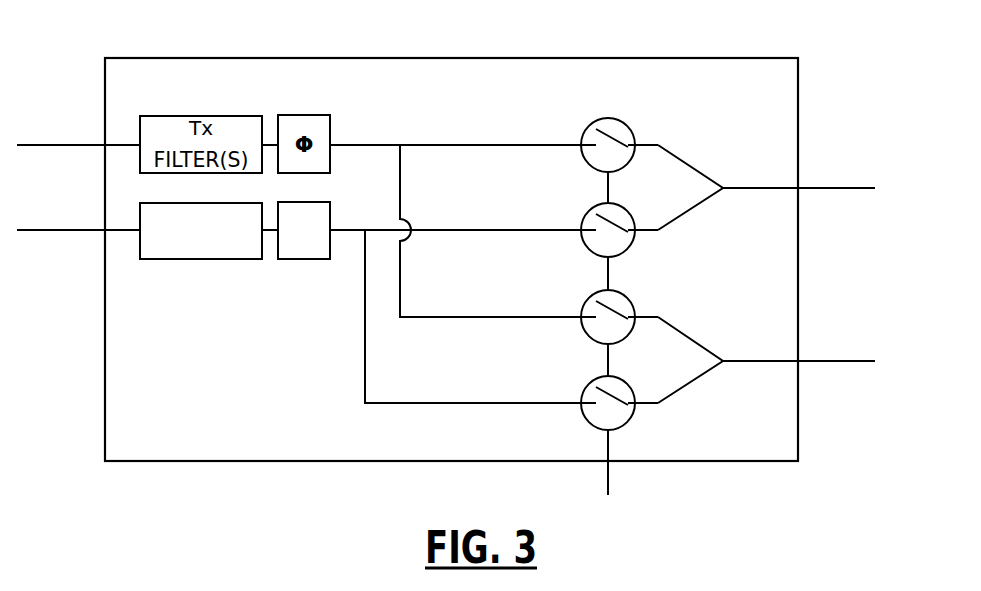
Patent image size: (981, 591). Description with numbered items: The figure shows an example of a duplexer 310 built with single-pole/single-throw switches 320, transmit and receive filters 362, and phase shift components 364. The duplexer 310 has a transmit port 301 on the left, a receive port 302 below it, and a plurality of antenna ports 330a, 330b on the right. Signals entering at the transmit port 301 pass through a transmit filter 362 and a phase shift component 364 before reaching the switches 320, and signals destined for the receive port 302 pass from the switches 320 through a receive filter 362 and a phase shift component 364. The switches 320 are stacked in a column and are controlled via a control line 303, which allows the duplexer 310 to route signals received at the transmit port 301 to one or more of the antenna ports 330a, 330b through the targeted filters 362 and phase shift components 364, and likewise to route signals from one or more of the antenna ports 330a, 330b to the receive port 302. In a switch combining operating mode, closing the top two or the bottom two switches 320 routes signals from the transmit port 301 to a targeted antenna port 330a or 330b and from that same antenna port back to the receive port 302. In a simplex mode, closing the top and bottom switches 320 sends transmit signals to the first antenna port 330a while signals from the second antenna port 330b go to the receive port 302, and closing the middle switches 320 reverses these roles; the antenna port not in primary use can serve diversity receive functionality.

The duplexer 310 is at (283, 58).
The transmit port 301 is at (87, 144).
The receive port 302 is at (87, 229).
The transmit and receive filters 362 is at (206, 290).
The phase shift components 364 is at (299, 290).
The single-pole/single-throw (SPST) switches 320 is at (621, 96).
The first antenna port 330a is at (856, 188).
The second antenna port 330b is at (856, 361).
The control line 303 is at (610, 475).